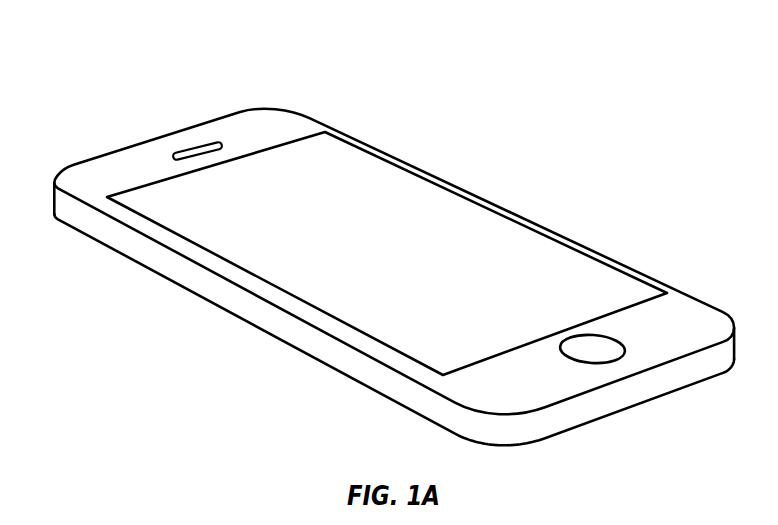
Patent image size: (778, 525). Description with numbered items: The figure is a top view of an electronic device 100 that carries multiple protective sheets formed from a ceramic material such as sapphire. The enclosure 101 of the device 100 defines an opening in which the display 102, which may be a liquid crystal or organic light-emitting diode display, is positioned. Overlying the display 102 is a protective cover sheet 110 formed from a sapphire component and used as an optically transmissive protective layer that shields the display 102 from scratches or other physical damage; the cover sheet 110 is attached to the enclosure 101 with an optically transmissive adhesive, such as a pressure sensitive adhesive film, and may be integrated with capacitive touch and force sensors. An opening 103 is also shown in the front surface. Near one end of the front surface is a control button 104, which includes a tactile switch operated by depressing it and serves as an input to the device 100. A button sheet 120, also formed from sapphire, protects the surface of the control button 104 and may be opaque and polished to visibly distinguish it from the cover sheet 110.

The device 100 is at (132, 50).
The enclosure 101 is at (560, 234).
The display 102 is at (472, 194).
The speaker opening 103 is at (196, 146).
The control button 104 is at (599, 363).
The protective cover sheet 110 is at (384, 173).
The button sheet 120 is at (598, 348).